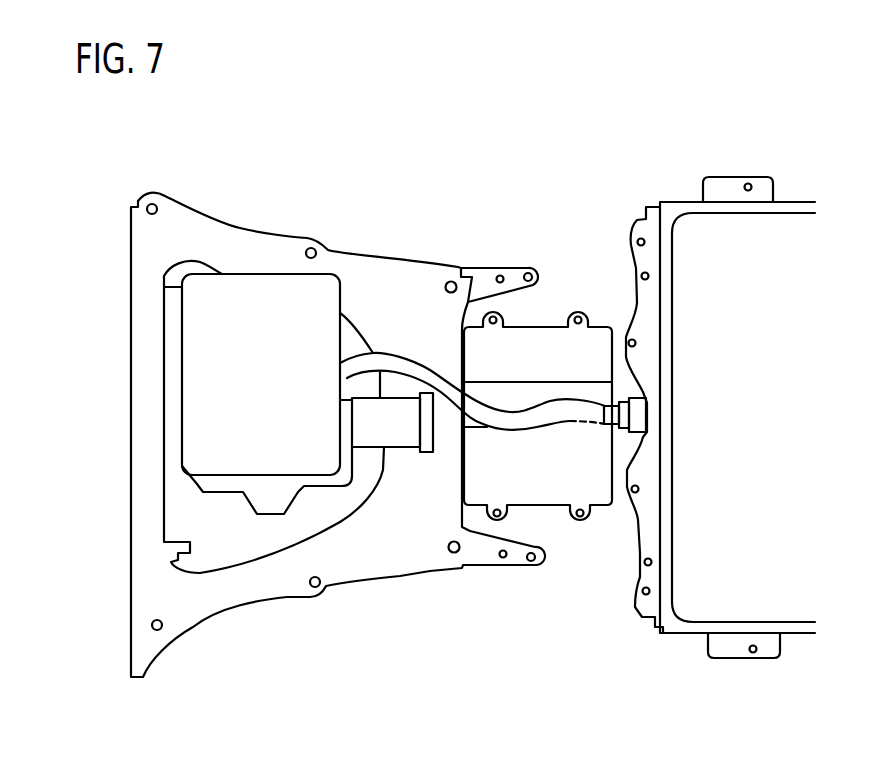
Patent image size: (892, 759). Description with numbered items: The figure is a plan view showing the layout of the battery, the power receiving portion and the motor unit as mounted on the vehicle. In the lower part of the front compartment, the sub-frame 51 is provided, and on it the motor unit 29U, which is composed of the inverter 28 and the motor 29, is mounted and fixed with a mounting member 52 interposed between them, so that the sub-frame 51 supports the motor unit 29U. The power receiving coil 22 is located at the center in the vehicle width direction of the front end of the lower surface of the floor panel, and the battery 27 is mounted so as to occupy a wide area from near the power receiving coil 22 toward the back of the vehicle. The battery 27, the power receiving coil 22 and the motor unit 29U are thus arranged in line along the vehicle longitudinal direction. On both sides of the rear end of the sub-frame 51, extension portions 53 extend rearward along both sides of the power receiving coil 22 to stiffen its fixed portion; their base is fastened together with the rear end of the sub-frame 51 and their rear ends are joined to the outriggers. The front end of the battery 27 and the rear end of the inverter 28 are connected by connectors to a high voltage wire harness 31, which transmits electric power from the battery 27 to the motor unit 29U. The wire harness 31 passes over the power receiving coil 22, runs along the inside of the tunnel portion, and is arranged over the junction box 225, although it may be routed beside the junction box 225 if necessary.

The sub-frame 51 is at (230, 225).
The extension portions 53 is at (495, 268).
The wire harness 31 is at (363, 327).
The junction box 225 is at (548, 383).
The power receiving coil 22 is at (538, 460).
The battery 27 is at (687, 635).
The inverter 28 is at (182, 409).
The motor 29 is at (197, 492).
The motor unit 29U is at (200, 417).
The mounting member 52 is at (375, 432).